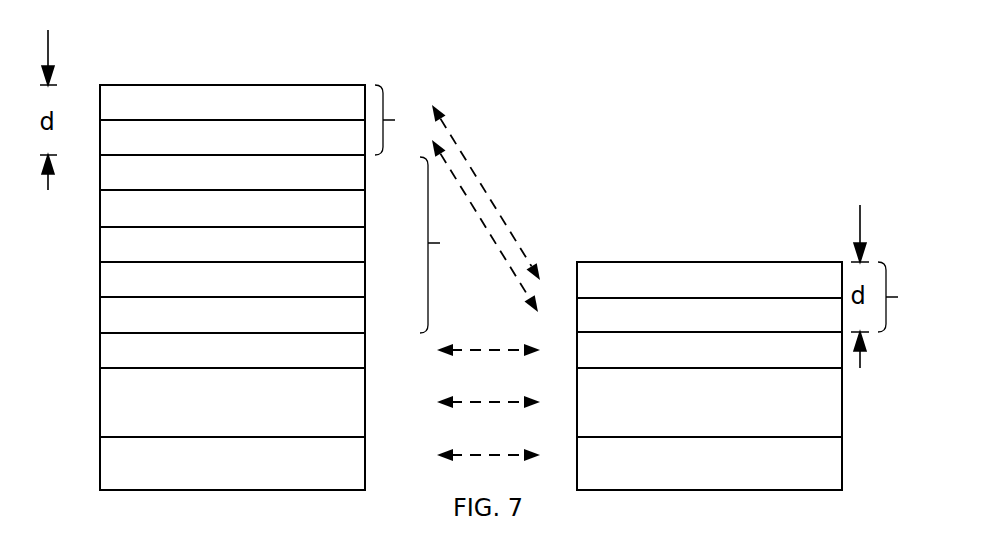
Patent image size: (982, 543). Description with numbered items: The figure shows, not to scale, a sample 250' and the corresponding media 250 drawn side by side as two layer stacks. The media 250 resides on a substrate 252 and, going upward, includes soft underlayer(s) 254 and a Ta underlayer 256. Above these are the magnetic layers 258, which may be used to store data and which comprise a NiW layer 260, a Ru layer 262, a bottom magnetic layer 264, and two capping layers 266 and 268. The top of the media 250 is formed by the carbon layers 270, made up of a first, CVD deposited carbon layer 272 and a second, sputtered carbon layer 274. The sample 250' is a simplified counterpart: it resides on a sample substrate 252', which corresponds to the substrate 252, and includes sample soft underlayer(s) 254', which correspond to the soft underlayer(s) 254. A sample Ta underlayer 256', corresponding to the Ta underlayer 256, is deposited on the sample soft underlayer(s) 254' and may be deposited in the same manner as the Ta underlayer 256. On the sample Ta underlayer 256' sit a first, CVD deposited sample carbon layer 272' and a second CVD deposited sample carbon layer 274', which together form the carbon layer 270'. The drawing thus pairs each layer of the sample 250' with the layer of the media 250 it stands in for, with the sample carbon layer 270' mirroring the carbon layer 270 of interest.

The media 250 is at (244, 249).
The substrate 252 is at (261, 448).
The soft underlayer 254 is at (203, 416).
The Ta underlayer 256 is at (261, 366).
The magnetic layers 258 is at (448, 245).
The NiW layer 260 is at (100, 326).
The Ru layer 262 is at (366, 277).
The bottom magnetic layer 264 is at (100, 255).
The capping layer 266 is at (366, 205).
The capping layer 268 is at (100, 186).
The carbon layers 270 is at (398, 120).
The first carbon layer 272 is at (217, 101).
The second carbon layer 274 is at (232, 87).
The sample 250' is at (709, 319).
The sample substrate 252' is at (739, 460).
The sample soft underlayer 254' is at (694, 424).
The sample Ta underlayer 256' is at (747, 373).
The carbon layer 270' is at (902, 297).
The first sample carbon layer 272' is at (692, 273).
The second sample carbon layer 274' is at (709, 254).